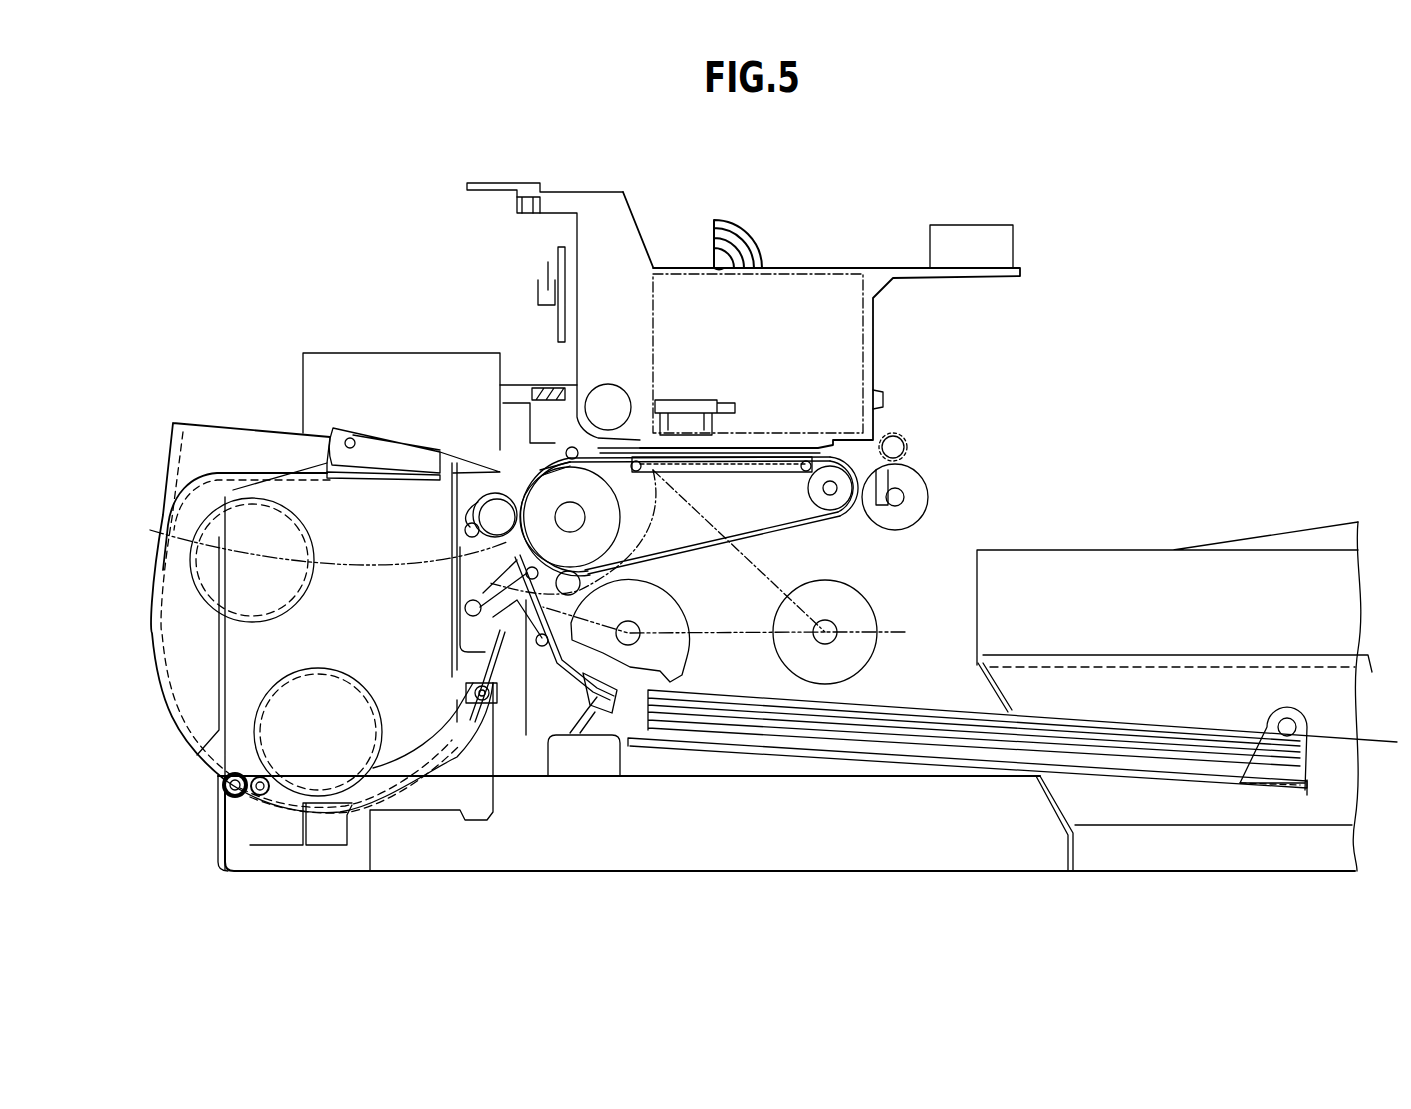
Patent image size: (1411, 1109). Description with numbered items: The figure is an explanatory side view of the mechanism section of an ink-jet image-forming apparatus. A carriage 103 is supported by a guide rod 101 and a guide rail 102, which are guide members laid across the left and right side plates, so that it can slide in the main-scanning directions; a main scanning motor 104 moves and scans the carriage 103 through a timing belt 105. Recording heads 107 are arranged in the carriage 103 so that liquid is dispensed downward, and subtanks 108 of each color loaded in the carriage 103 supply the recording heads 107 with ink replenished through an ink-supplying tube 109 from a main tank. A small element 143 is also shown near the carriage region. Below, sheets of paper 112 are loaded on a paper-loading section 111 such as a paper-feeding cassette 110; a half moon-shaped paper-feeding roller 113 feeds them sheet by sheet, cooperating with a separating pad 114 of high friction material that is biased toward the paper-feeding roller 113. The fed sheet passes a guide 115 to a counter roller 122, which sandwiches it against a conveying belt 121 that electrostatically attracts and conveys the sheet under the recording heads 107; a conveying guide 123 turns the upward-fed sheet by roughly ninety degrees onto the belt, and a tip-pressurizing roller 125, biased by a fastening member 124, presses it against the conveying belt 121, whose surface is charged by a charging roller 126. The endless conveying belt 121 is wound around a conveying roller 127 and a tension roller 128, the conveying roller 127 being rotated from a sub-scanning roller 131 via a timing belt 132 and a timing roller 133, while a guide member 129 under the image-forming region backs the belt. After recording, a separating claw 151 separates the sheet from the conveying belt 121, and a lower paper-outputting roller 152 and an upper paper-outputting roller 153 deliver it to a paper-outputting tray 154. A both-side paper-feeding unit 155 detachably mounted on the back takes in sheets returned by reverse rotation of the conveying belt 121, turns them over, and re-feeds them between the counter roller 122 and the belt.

The guide rod 101 is at (606, 398).
The guide rail 102 is at (497, 182).
The carriage 103 is at (637, 252).
The main scanning motor 104 is at (318, 385).
The timing belt 105 is at (568, 447).
The recording heads 107 is at (787, 445).
The subtanks 108 is at (780, 292).
The ink-supplying tube 109 is at (728, 242).
The paper-feeding cassette 110 is at (1047, 858).
The paper-loading section (pressure plate) 111 is at (790, 753).
The sheets of paper 112 is at (913, 740).
The paper-feeding roller 113 is at (665, 655).
The separating pad 114 is at (585, 740).
The guide 115 is at (522, 607).
The conveying belt 121 is at (835, 520).
The counter roller 122 is at (435, 450).
The conveying guide 123 is at (490, 505).
The fastening member 124 is at (484, 470).
The tip-pressurizing roller 125 is at (500, 447).
The charging roller 126 is at (640, 583).
The conveying roller 127 is at (612, 515).
The tension roller 128 is at (812, 490).
The guide member 129 is at (728, 458).
The sub-scanning roller 131 is at (858, 652).
The timing belt 132 is at (905, 632).
The timing roller 133 is at (150, 530).
The sensor 143 is at (548, 290).
The separating claw 151 is at (907, 465).
The lower paper-outputting roller 152 is at (885, 515).
The upper paper-outputting roller 153 is at (896, 436).
The paper-outputting tray 154 is at (1160, 570).
The both-side paper-feeding unit 155 is at (232, 427).